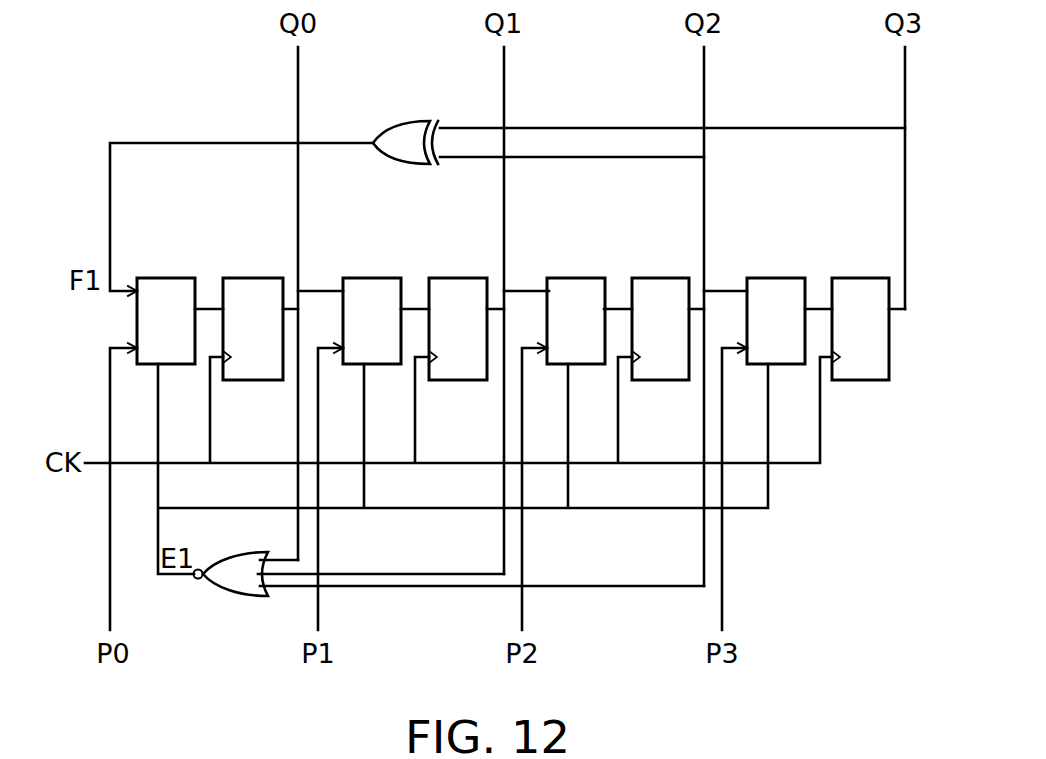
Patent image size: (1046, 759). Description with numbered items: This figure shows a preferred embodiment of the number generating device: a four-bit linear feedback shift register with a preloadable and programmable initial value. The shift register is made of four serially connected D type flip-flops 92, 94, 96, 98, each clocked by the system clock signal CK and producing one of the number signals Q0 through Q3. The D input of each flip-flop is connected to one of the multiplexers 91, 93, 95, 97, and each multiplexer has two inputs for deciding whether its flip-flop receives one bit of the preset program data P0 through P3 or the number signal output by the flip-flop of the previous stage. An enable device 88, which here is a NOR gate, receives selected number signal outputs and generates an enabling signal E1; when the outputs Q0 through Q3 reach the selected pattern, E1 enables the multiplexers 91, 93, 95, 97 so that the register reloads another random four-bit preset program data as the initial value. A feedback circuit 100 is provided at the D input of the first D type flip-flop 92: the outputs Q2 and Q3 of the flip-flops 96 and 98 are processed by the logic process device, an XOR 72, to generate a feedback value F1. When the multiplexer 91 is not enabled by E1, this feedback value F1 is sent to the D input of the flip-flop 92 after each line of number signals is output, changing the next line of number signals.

The XOR 72 is at (411, 119).
The enable device 88 is at (242, 597).
The multiplexer 91 is at (158, 278).
The D type flip-flop 92 is at (255, 278).
The multiplexer 93 is at (366, 278).
The D type flip-flop 94 is at (459, 278).
The multiplexer 95 is at (569, 278).
The D type flip-flop 96 is at (661, 278).
The multiplexer 97 is at (769, 278).
The D type flip-flop 98 is at (863, 278).
The feedback circuit 100 is at (158, 143).